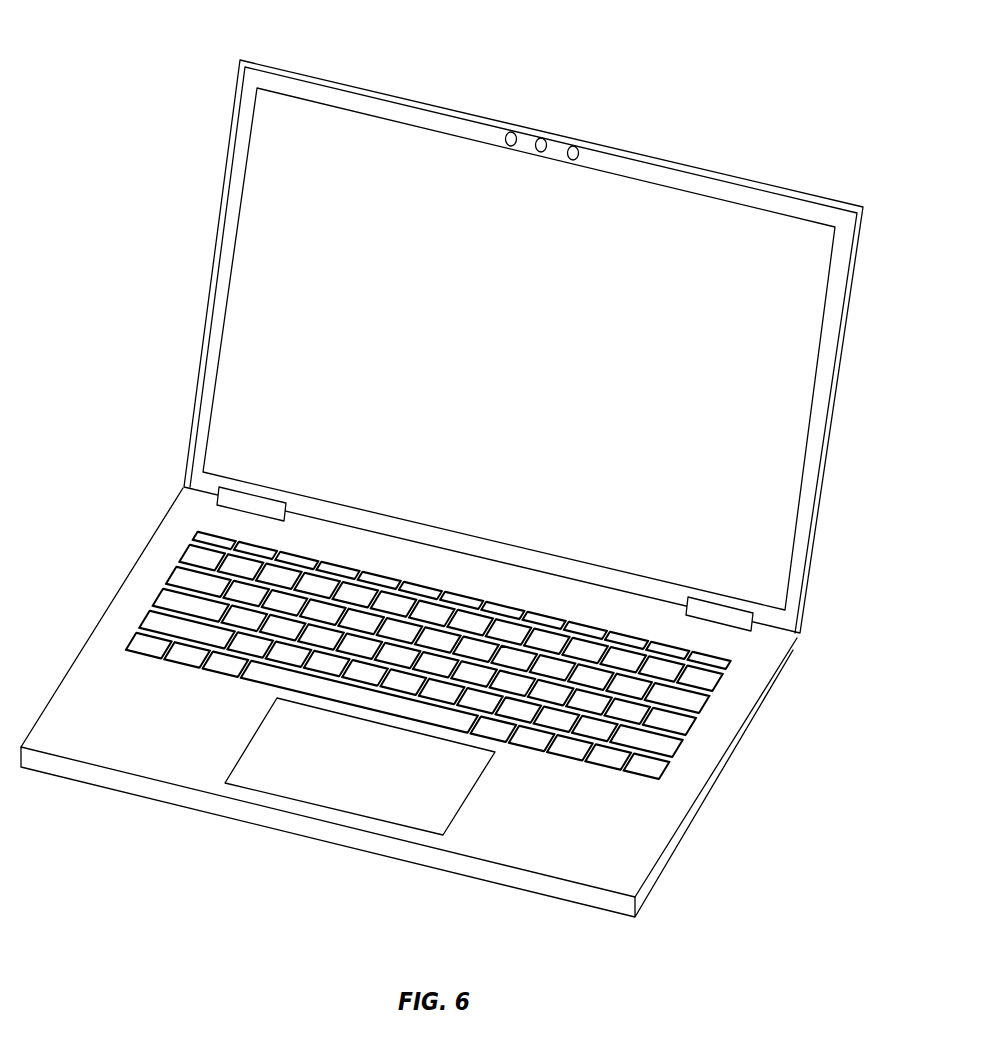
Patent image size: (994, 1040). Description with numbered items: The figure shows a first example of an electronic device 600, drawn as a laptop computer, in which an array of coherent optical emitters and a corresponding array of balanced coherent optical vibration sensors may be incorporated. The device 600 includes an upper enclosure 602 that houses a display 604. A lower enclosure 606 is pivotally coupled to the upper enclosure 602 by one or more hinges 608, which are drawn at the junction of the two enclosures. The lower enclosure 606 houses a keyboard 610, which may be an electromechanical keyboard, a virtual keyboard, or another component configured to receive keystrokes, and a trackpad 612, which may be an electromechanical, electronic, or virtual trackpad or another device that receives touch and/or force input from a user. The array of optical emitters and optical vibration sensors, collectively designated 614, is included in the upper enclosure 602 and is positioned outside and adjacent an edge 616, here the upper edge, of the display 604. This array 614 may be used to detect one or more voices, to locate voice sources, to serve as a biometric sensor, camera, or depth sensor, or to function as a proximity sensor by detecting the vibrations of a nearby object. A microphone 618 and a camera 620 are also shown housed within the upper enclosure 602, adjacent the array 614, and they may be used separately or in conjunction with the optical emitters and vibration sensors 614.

The electronic device 600 is at (88, 78).
The upper enclosure 602 is at (866, 287).
The display 604 is at (232, 243).
The lower enclosure 606 is at (785, 700).
The hinges 608 is at (216, 497).
The keyboard 610 is at (176, 565).
The trackpad 612 is at (338, 812).
The array of coherent optical emitters and balanced coherent optical vibration senso 614 is at (512, 131).
The edge of the display 616 is at (338, 107).
The microphone 618 is at (573, 145).
The camera 620 is at (541, 137).